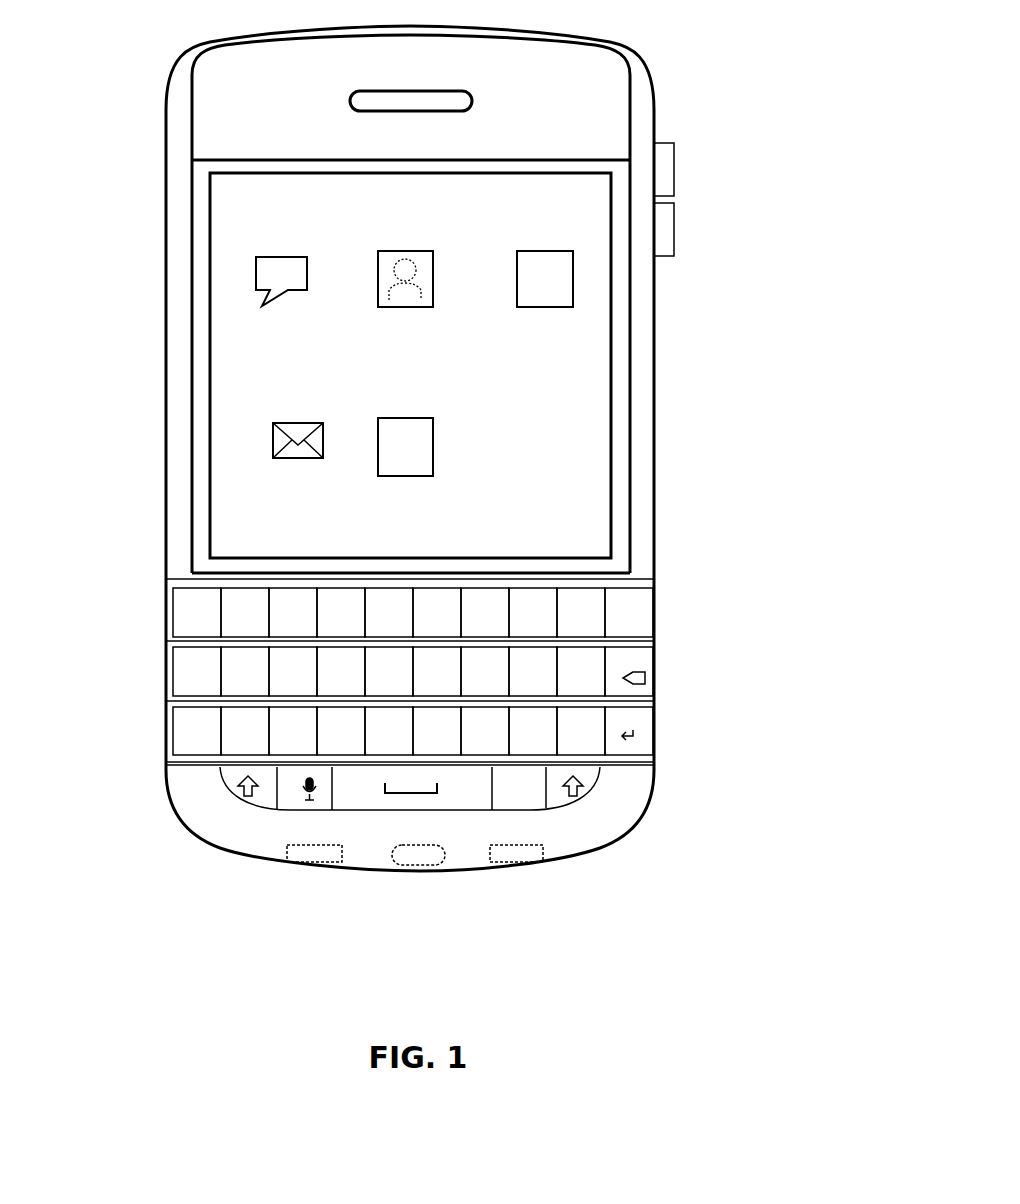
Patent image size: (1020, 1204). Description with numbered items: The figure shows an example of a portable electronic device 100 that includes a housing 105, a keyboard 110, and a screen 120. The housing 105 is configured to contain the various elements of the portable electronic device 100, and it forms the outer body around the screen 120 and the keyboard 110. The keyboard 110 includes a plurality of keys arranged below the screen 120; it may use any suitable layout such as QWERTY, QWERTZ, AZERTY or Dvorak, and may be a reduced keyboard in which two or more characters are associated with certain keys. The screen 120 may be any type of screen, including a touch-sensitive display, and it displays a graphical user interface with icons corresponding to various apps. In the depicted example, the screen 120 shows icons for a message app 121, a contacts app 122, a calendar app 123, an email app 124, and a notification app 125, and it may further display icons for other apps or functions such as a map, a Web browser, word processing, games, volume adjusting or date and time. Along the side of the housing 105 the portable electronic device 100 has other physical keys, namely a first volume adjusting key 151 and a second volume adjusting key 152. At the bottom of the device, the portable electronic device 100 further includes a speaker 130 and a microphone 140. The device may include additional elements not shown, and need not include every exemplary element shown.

The portable electronic device 100 is at (92, 95).
The housing 105 is at (551, 109).
The keyboard 110 is at (661, 660).
The screen 120 is at (531, 538).
The message app 121 is at (282, 255).
The contacts app 122 is at (405, 250).
The calendar app 123 is at (545, 250).
The email app 124 is at (296, 421).
The notification app 125 is at (402, 417).
The speaker 130 is at (315, 868).
The microphone 140 is at (420, 875).
The first volume adjusting key 151 is at (675, 172).
The second volume adjusting key 152 is at (675, 232).